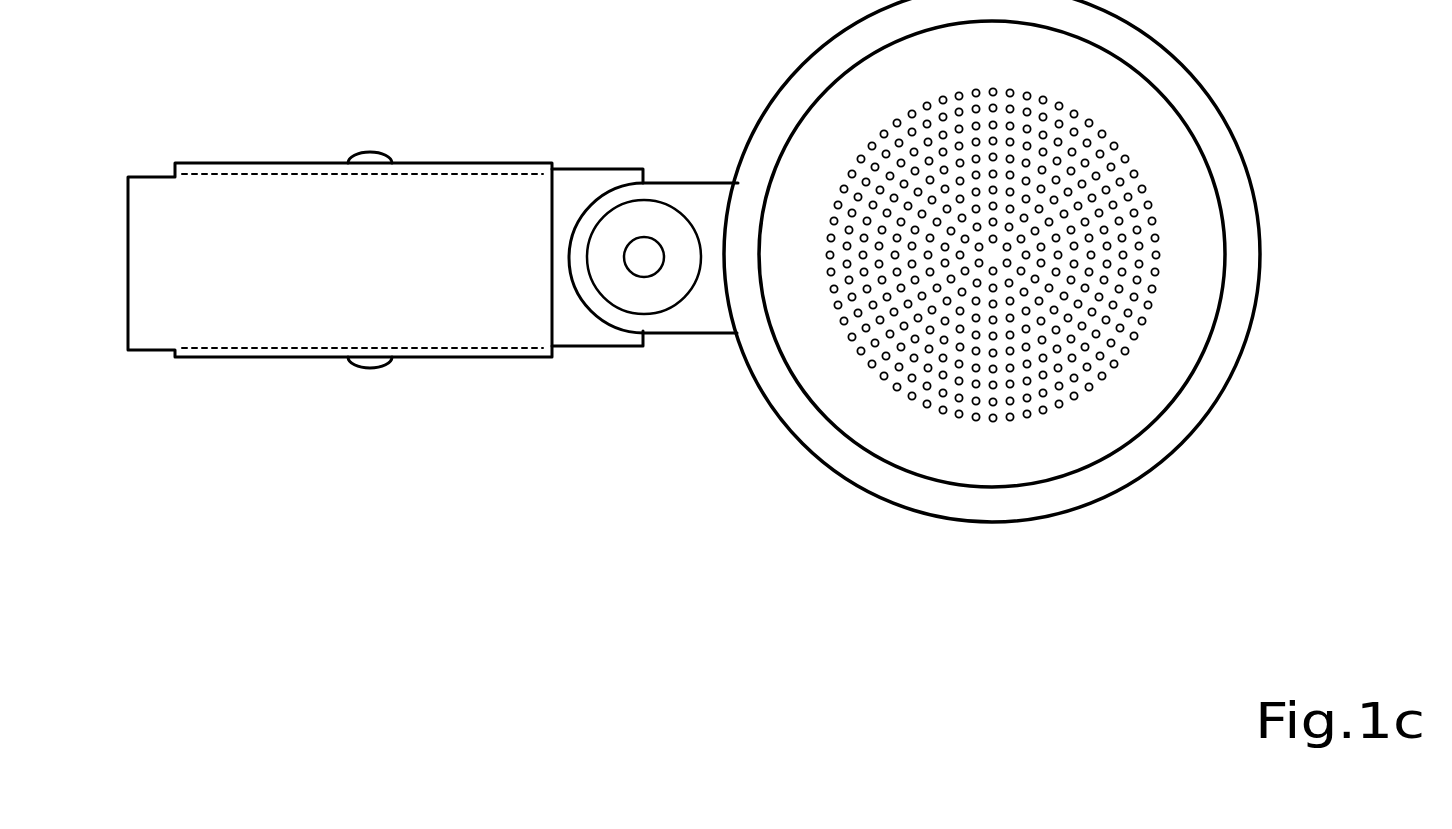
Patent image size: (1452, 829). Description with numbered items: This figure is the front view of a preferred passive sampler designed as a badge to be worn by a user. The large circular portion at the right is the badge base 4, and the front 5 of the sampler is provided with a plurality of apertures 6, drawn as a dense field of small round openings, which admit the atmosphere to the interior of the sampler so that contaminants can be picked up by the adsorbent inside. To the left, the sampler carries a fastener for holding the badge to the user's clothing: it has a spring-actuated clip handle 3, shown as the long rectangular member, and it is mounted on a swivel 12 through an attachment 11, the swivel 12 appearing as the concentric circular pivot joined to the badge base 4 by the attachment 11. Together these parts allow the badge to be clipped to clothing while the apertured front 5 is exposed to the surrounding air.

The spring-actuated clip handle 3 is at (321, 220).
The badge base 4 is at (1217, 140).
The front 5 is at (1193, 215).
The apertures 6 is at (876, 372).
The attachment 11 is at (703, 317).
The swivel 12 is at (627, 236).